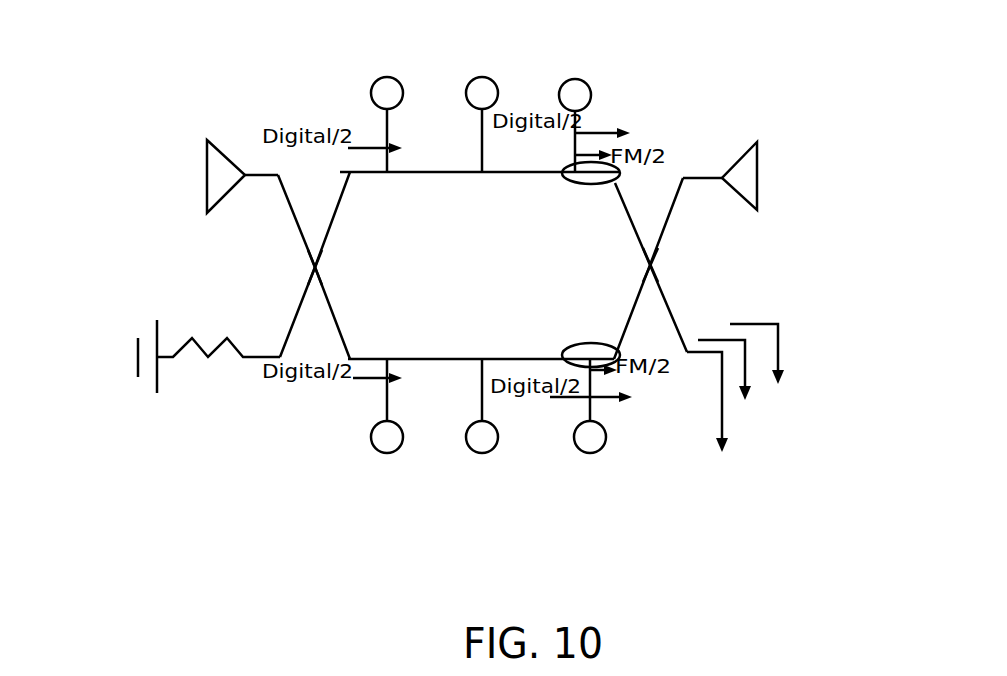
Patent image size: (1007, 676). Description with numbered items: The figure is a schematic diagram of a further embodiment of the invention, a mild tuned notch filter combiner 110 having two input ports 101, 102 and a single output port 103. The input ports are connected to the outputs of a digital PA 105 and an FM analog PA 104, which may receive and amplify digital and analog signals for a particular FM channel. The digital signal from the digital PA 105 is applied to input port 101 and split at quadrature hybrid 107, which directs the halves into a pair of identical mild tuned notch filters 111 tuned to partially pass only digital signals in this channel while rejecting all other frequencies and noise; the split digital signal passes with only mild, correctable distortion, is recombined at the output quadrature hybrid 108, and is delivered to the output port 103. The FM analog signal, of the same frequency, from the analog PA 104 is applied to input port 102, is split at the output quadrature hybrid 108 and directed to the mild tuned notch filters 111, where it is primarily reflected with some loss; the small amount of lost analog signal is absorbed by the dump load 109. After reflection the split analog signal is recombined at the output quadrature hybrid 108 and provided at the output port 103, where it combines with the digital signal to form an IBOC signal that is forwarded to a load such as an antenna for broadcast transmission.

The mild tuned notch filter combiner 110 is at (95, 45).
The input port 101 is at (290, 226).
The input port 102 is at (672, 224).
The output port 103 is at (734, 412).
The FM analog PA 104 is at (748, 181).
The digital PA 105 is at (222, 176).
The quadrature hybrid 107 is at (325, 262).
The output quadrature hybrid 108 is at (660, 266).
The dump load 109 is at (195, 388).
The mild tuned notch filters 111 is at (561, 335).